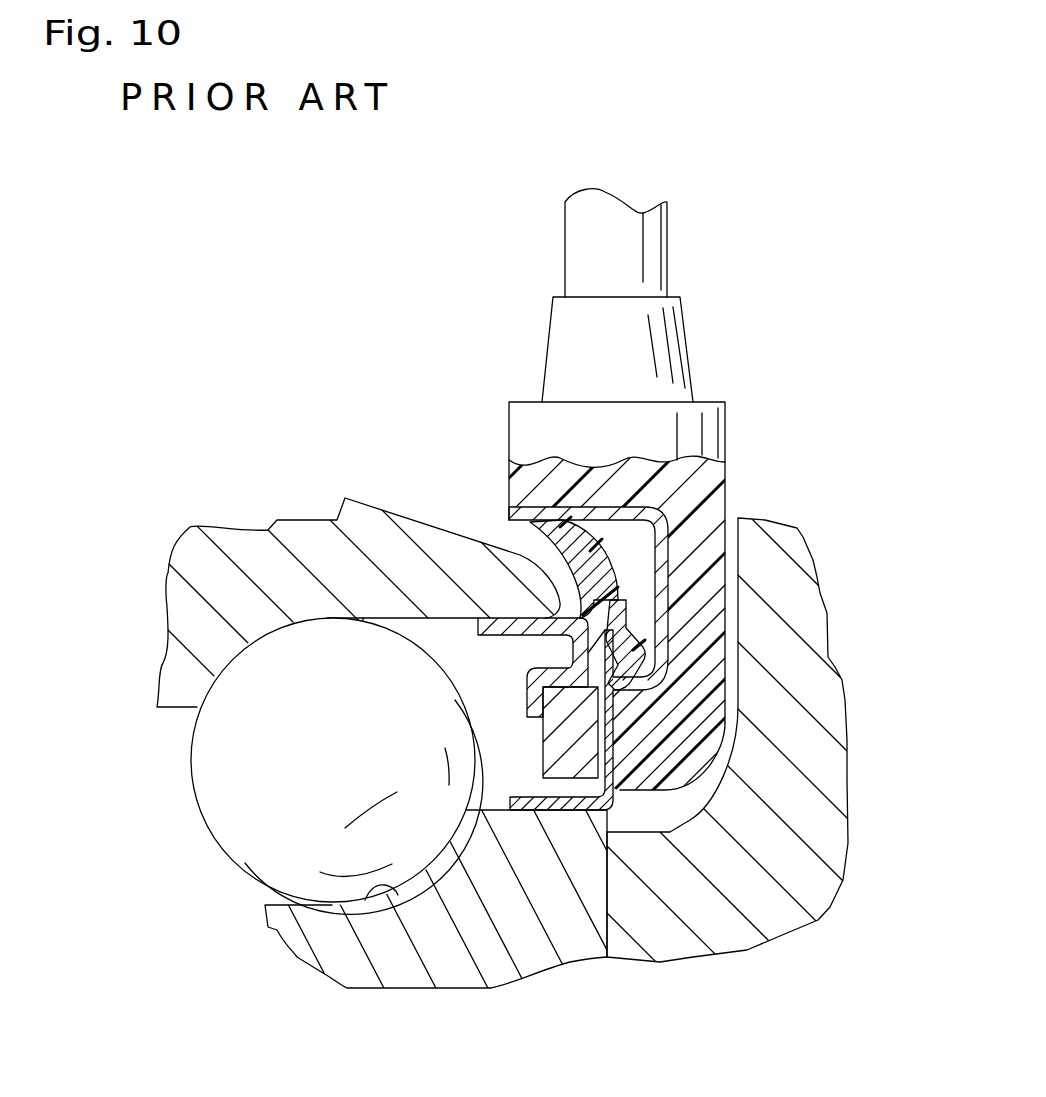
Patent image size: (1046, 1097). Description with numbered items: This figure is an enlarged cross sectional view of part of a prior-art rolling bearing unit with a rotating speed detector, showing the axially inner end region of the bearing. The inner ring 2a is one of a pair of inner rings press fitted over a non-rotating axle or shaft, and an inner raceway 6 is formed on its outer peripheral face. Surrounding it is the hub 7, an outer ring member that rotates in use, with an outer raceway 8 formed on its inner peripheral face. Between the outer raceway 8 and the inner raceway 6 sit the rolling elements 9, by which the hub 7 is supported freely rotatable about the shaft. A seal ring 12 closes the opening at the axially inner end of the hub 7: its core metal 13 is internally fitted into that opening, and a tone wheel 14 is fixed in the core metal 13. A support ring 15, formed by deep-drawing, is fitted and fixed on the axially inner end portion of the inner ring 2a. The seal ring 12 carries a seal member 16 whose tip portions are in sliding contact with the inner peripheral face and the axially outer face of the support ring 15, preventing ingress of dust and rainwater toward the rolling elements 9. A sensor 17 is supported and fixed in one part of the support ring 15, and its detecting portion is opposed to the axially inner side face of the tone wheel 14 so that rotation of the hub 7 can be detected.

The inner ring 2a is at (293, 917).
The inner raceway 6 is at (370, 893).
The hub 7 is at (295, 545).
The outer raceway 8 is at (362, 628).
The rolling element 9 is at (238, 792).
The seal ring 12 is at (497, 632).
The core metal 13 is at (485, 648).
The tone wheel 14 is at (570, 762).
The support ring 15 is at (667, 533).
The seal member 16 is at (607, 575).
The sensor 17 is at (707, 633).